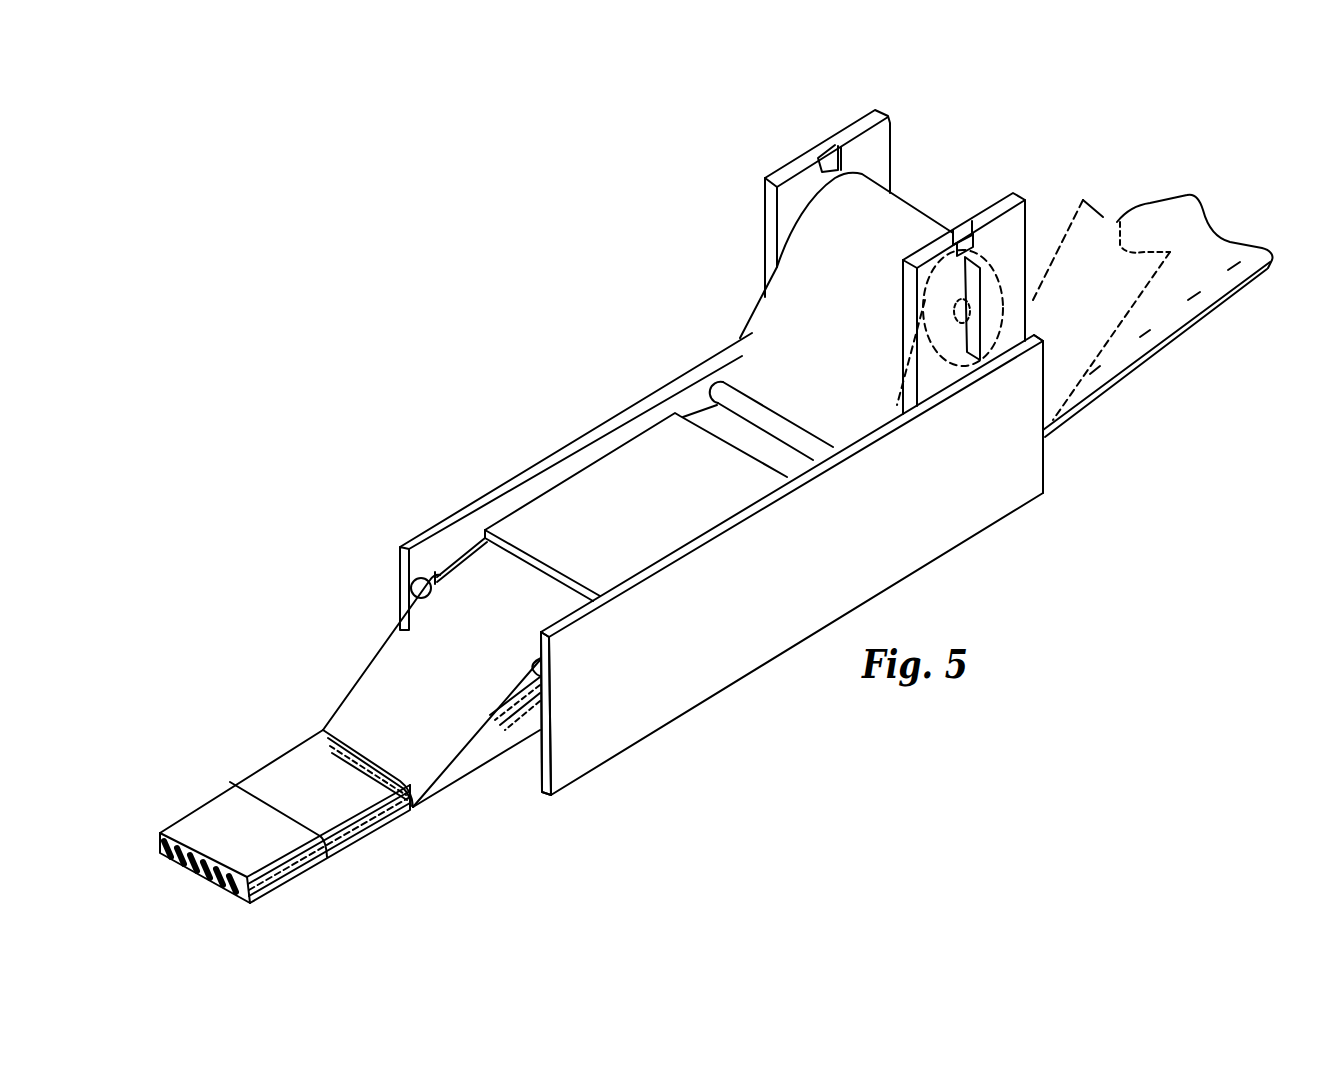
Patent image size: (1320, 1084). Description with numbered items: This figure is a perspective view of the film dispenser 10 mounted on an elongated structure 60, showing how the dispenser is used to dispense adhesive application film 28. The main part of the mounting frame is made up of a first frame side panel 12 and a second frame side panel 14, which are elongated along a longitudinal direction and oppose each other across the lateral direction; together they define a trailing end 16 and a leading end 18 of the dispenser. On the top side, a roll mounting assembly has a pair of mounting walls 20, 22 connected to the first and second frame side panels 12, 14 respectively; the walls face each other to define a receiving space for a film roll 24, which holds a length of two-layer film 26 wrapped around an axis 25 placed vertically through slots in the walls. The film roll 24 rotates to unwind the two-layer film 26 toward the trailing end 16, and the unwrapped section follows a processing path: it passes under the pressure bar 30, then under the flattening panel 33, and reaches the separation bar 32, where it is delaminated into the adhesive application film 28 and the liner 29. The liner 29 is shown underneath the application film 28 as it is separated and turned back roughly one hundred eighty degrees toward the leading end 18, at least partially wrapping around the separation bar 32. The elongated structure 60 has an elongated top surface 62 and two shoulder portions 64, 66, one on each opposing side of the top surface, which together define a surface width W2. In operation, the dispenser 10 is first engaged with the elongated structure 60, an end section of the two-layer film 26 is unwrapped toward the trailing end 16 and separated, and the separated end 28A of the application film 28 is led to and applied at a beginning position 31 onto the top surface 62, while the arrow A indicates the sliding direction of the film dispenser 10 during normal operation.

The film dispenser 10 is at (1092, 184).
The first frame side panel 12 is at (570, 446).
The second frame side panel 14 is at (782, 636).
The trailing end 16 is at (540, 777).
The leading end 18 is at (1043, 454).
The mounting wall 20 is at (868, 118).
The mounting wall 22 is at (1027, 232).
The film roll 24 is at (1028, 292).
The axis 25 is at (962, 311).
The two-layer film 26 is at (905, 213).
The adhesive application film 28 is at (387, 657).
The separated end 28A is at (283, 767).
The liner 29 is at (543, 669).
The pressure bar 30 is at (727, 388).
The beginning position 31 is at (232, 783).
The separation bar 32 is at (421, 578).
The flattening panel 33 is at (650, 446).
The elongated structure 60 is at (1210, 217).
The elongated top surface 62 is at (193, 817).
The shoulder portion 64 is at (160, 843).
The shoulder portion 66 is at (290, 878).
The surface width W2 is at (222, 922).
The arrow A is at (986, 559).